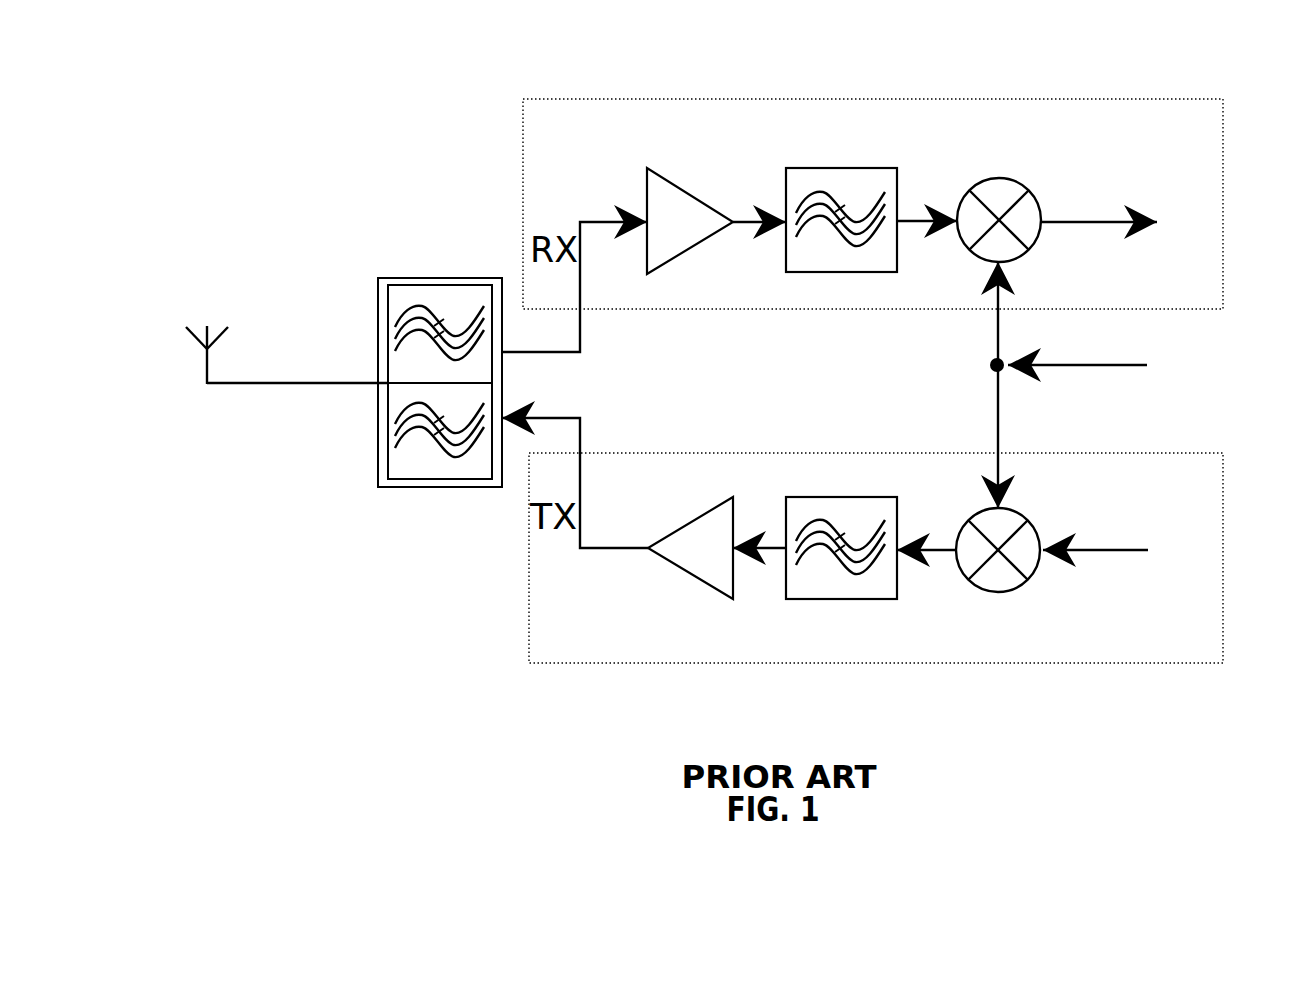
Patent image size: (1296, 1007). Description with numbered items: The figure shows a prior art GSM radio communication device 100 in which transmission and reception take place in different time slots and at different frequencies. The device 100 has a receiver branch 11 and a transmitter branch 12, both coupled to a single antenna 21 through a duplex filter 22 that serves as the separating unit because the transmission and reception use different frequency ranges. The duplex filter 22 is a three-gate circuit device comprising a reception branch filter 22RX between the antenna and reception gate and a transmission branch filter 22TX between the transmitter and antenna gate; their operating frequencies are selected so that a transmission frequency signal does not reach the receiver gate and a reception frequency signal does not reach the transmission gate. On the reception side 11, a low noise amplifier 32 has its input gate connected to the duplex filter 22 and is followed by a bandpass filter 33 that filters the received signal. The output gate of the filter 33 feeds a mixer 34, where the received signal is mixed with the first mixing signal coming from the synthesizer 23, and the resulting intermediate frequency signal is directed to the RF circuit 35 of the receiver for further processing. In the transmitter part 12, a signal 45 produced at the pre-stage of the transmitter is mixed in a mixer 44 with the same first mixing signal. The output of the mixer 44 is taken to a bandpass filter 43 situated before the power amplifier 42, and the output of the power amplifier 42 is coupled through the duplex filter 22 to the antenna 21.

The GSM communication device 100 is at (250, 57).
The antenna 21 is at (276, 355).
The duplex filter 22 is at (390, 366).
The reception branch filter 22RX is at (385, 357).
The transmission branch filter 22TX is at (385, 462).
The receiver branch 11 is at (1223, 98).
The transmitter branch 12 is at (1223, 663).
The low noise amplifier 32 is at (690, 190).
The bandpass filter 33 is at (863, 168).
The mixer 34 is at (998, 177).
The RF circuit of the receiver 35 is at (1117, 226).
The synthesizer 23 is at (1084, 385).
The signal produced at the pre-stage of the transmitter 45 is at (1120, 557).
The mixer 44 is at (993, 594).
The bandpass filter 43 is at (825, 599).
The power amplifier 42 is at (683, 570).